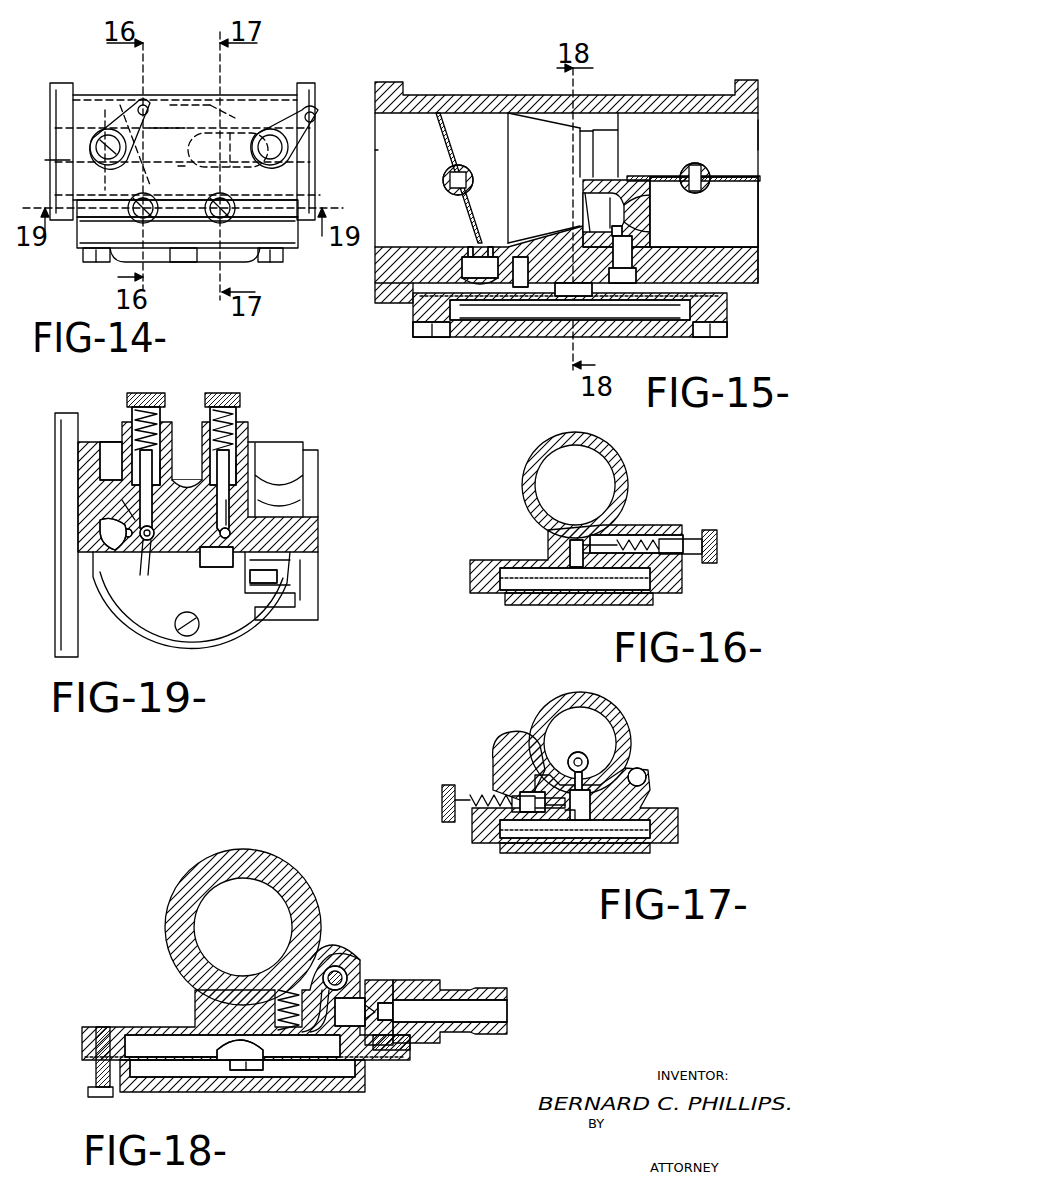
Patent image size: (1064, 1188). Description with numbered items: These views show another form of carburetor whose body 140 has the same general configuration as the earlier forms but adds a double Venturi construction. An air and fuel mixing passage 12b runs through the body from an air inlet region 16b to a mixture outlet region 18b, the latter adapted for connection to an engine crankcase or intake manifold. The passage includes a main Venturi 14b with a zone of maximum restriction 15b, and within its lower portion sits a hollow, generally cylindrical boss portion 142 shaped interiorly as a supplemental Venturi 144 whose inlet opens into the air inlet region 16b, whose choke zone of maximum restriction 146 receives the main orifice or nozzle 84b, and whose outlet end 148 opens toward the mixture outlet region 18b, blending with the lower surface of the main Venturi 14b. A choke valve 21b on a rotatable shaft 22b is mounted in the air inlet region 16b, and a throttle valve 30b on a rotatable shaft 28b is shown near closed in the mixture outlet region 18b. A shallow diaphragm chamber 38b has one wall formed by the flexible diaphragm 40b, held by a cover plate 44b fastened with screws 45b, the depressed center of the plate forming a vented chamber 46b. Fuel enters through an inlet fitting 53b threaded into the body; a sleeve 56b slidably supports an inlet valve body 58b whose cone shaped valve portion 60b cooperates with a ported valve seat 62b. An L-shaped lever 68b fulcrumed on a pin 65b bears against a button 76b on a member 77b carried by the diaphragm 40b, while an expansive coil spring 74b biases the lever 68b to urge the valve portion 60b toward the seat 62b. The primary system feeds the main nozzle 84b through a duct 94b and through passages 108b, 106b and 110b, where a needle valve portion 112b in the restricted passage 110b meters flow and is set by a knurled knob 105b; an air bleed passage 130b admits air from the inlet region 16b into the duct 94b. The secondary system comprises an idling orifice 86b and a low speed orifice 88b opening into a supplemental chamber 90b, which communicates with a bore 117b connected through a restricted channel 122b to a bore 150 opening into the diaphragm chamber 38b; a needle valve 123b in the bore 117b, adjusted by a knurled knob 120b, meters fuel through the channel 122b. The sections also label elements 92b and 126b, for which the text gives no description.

In FIG. 14, the carburetor body 140 is at (185, 138).
In FIG. 15, the carburetor body 140 is at (623, 93).
In FIG. 19, the carburetor body 140 is at (258, 628).
In FIG. 16, the carburetor body 140 is at (618, 455).
In FIG. 17, the carburetor body 140 is at (548, 700).
In FIG. 18, the carburetor body 140 is at (297, 868).
In FIG. 15, the air and fuel mixing passage 12b is at (555, 162).
In FIG. 15, the main Venturi 14b is at (600, 150).
In FIG. 14, the zone of maximum restriction 15b is at (167, 130).
In FIG. 15, the zone of maximum restriction 15b is at (588, 128).
In FIG. 14, the air inlet region 16b is at (278, 95).
In FIG. 15, the air inlet region 16b is at (756, 135).
In FIG. 14, the mixture outlet region 18b is at (42, 166).
In FIG. 15, the mixture outlet region 18b is at (415, 159).
In FIG. 14, the choke valve 21b is at (300, 150).
In FIG. 15, the choke valve 21b is at (668, 177).
In FIG. 14, the choke shaft 22b is at (300, 163).
In FIG. 15, the choke shaft 22b is at (712, 176).
In FIG. 14, the throttle shaft 28b is at (90, 140).
In FIG. 15, the throttle shaft 28b is at (462, 176).
In FIG. 14, the throttle valve 30b is at (118, 110).
In FIG. 15, the throttle valve 30b is at (440, 128).
In FIG. 15, the diaphragm chamber 38b is at (566, 264).
In FIG. 16, the diaphragm chamber 38b is at (525, 570).
In FIG. 17, the diaphragm chamber 38b is at (680, 816).
In FIG. 18, the diaphragm chamber 38b is at (150, 1040).
In FIG. 15, the flexible diaphragm 40b is at (663, 330).
In FIG. 18, the flexible diaphragm 40b is at (165, 1062).
In FIG. 14, the cover plate 44b is at (232, 258).
In FIG. 15, the cover plate 44b is at (538, 337).
In FIG. 19, the cover plate 44b is at (160, 635).
In FIG. 16, the cover plate 44b is at (540, 603).
In FIG. 17, the cover plate 44b is at (620, 846).
In FIG. 18, the cover plate 44b is at (333, 1093).
In FIG. 14, the screws 45b is at (90, 265).
In FIG. 15, the screws 45b is at (430, 337).
In FIG. 19, the screws 45b is at (188, 637).
In FIG. 18, the screws 45b is at (100, 1062).
In FIG. 15, the vented chamber 46b is at (643, 320).
In FIG. 18, the inlet fitting 53b is at (470, 990).
In FIG. 18, the sleeve 56b is at (372, 990).
In FIG. 18, the inlet valve body 58b is at (358, 1045).
In FIG. 18, the cone shaped valve portion 60b is at (405, 1048).
In FIG. 18, the ported valve seat 62b is at (400, 984).
In FIG. 17, the fulcrum pin 65b is at (648, 777).
In FIG. 18, the fulcrum pin 65b is at (339, 970).
In FIG. 15, the L-shaped lever 68b is at (593, 300).
In FIG. 18, the L-shaped lever 68b is at (300, 1040).
In FIG. 18, the expansive coil spring 74b is at (285, 1000).
In FIG. 18, the button 76b is at (235, 1052).
In FIG. 18, the diaphragm member 77b is at (244, 1070).
In FIG. 15, the main nozzle 84b is at (614, 229).
In FIG. 19, the main nozzle 84b is at (231, 535).
In FIG. 17, the main nozzle 84b is at (575, 752).
In FIG. 15, the idling orifice 86b is at (470, 246).
In FIG. 19, the idling orifice 86b is at (106, 530).
In FIG. 15, the low speed orifice 88b is at (487, 243).
In FIG. 19, the low speed orifice 88b is at (124, 530).
In FIG. 15, the supplemental chamber 90b is at (460, 270).
In FIG. 19, the supplemental chamber 90b is at (104, 540).
In FIG. 15, the fuel passage 92b is at (480, 283).
In FIG. 15, the main fuel duct 94b is at (626, 260).
In FIG. 19, the main fuel duct 94b is at (266, 582).
In FIG. 17, the main fuel duct 94b is at (592, 805).
In FIG. 14, the knurled knob 105b is at (232, 216).
In FIG. 19, the knurled knob 105b is at (240, 400).
In FIG. 17, the knurled knob 105b is at (442, 800).
In FIG. 19, the fuel passage 106b is at (238, 498).
In FIG. 17, the fuel passage 106b is at (540, 798).
In FIG. 17, the fuel passage 108b is at (555, 812).
In FIG. 19, the restricted passage 110b is at (221, 564).
In FIG. 17, the restricted passage 110b is at (568, 820).
In FIG. 19, the needle valve portion 112b is at (232, 522).
In FIG. 17, the needle valve portion 112b is at (520, 840).
In FIG. 19, the idle bore 117b is at (163, 490).
In FIG. 16, the idle bore 117b is at (620, 540).
In FIG. 14, the knurled knob 120b is at (152, 219).
In FIG. 19, the knurled knob 120b is at (148, 393).
In FIG. 16, the knurled knob 120b is at (718, 545).
In FIG. 19, the restricted channel 122b is at (153, 536).
In FIG. 16, the restricted channel 122b is at (588, 540).
In FIG. 19, the idle needle valve 123b is at (152, 528).
In FIG. 16, the idle needle valve 123b is at (595, 578).
In FIG. 19, the passage 126b is at (133, 512).
In FIG. 15, the air bleed passage 130b is at (652, 244).
In FIG. 15, the boss portion 142 is at (608, 183).
In FIG. 17, the boss portion 142 is at (587, 757).
In FIG. 15, the supplemental Venturi 144 is at (650, 200).
In FIG. 15, the supplemental Venturi restriction zone 146 is at (628, 208).
In FIG. 17, the supplemental Venturi restriction zone 146 is at (590, 766).
In FIG. 14, the supplemental Venturi outlet 148 is at (167, 164).
In FIG. 15, the supplemental Venturi outlet 148 is at (592, 200).
In FIG. 15, the fuel chamber bore 150 is at (522, 288).
In FIG. 19, the fuel chamber bore 150 is at (147, 545).
In FIG. 16, the fuel chamber bore 150 is at (578, 565).